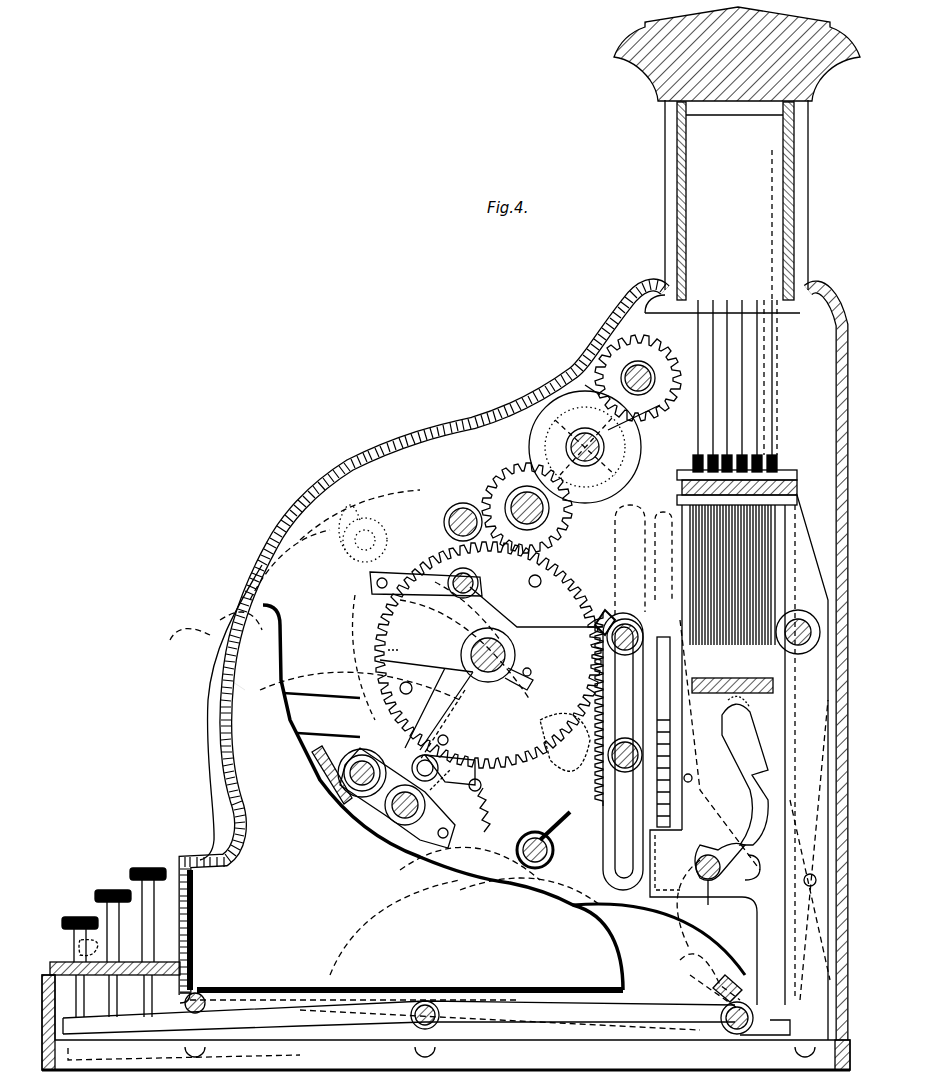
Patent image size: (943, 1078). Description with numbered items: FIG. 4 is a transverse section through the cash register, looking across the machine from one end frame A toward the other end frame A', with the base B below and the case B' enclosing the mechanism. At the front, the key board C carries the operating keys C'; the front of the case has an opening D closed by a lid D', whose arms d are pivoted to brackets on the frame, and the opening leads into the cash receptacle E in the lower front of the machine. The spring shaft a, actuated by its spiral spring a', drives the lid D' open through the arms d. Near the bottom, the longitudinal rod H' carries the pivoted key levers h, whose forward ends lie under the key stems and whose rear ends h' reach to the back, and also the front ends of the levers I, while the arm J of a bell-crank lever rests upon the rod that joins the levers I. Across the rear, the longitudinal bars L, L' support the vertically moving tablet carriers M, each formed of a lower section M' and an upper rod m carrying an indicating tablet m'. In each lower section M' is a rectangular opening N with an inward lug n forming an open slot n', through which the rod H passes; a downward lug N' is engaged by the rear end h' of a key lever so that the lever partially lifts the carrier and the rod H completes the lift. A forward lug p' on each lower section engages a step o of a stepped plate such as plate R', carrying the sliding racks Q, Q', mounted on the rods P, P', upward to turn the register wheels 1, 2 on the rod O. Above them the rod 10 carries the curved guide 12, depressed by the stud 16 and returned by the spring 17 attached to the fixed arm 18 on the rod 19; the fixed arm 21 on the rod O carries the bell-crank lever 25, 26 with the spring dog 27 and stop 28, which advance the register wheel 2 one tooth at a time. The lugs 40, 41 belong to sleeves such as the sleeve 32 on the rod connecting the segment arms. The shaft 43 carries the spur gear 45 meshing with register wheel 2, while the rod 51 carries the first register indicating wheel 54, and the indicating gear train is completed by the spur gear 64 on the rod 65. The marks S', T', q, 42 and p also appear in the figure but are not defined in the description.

The case B' is at (627, 323).
The indicating tablets m' is at (737, 302).
The upper sections or rods m is at (721, 491).
The longitudinal bar L is at (748, 483).
The tablet carriers M is at (751, 575).
The lower sections M' is at (732, 673).
The longitudinal bar L' is at (747, 755).
The shaft S' is at (798, 622).
The downwardly projecting lugs N' is at (807, 767).
The end frame A' is at (696, 848).
The rectangular openings N is at (741, 770).
The inwardly extending lug n is at (726, 859).
The open slot n' is at (752, 867).
The rod H is at (718, 899).
The lugs p' is at (667, 862).
The sliding rack Q is at (619, 751).
The sliding rack Q' is at (581, 785).
The rod P is at (628, 679).
The rod P' is at (643, 587).
The stepped plate R' is at (656, 732).
The tooth T' is at (614, 603).
The steps o is at (689, 769).
The spur gear wheel 64 is at (638, 378).
The rod 65 is at (651, 383).
The first register indicating wheel 54 is at (540, 433).
The rod 51 is at (596, 447).
The spur gear wheel 45 is at (508, 482).
The shaft 43 is at (548, 520).
The rod 10 is at (455, 505).
The curved guide 12 is at (385, 533).
The end frame A is at (625, 423).
The register wheel 2 is at (489, 655).
The longitudinal rod O is at (515, 652).
The fixed arm 21 is at (455, 675).
The spring actuated dogs 27 is at (372, 590).
The bell-crank lever arm 25 is at (444, 592).
The bell-crank lever arm 26 is at (505, 604).
The laterally projecting studs 16 is at (530, 580).
The lug 40 is at (400, 690).
The stop 28 is at (398, 650).
The register wheel 1 is at (442, 725).
The lever q is at (450, 758).
The retracting springs 17 is at (485, 798).
The lug 41 is at (345, 785).
The bar 42 is at (313, 758).
The sleeve 32 is at (375, 800).
The rod 19 is at (405, 820).
The fixed arms 18 is at (443, 840).
The spring shaft a is at (518, 850).
The spiral spring a' is at (530, 827).
The cash receptacle E is at (406, 802).
The arms d is at (321, 715).
The lid D' is at (197, 685).
The opening D is at (210, 702).
The key board C is at (75, 944).
The operating keys C' is at (122, 931).
The base B is at (446, 1016).
The key levers h is at (399, 1017).
The longitudinal rod H' is at (315, 993).
The rear ends of key levers h' is at (771, 1016).
The bell-crank lever arm J is at (735, 977).
The levers I is at (717, 992).
The pawl p is at (751, 818).